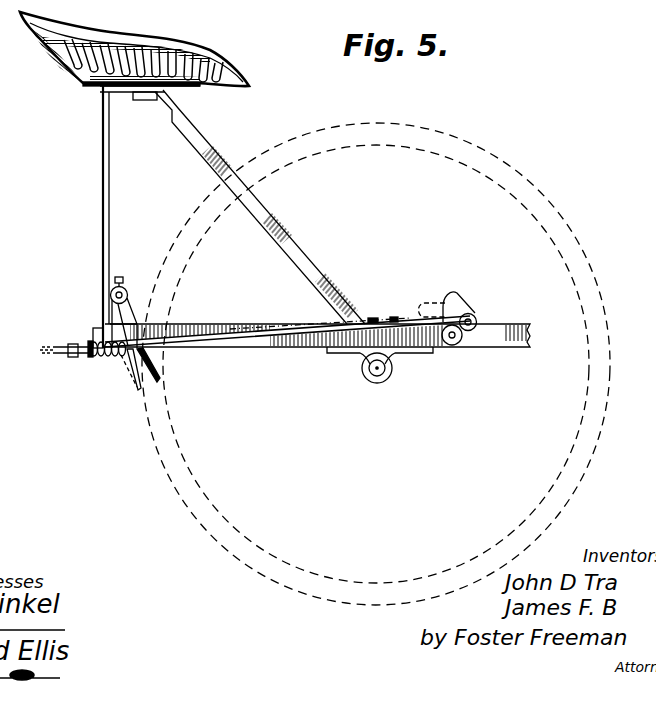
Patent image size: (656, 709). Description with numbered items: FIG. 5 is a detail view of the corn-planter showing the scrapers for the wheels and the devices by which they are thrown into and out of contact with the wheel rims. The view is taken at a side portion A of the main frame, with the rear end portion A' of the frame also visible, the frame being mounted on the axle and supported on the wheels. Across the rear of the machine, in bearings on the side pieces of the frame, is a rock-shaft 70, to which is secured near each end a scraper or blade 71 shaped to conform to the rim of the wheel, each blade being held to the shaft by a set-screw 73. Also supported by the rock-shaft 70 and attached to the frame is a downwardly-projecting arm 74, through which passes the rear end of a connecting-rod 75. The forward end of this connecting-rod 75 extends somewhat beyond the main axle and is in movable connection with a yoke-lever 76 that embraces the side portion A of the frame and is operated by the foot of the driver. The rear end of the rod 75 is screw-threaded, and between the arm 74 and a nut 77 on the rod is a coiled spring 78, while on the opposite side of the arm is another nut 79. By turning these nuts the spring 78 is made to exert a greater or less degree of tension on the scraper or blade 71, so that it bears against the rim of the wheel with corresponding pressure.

The rock-shaft 70 is at (126, 287).
The scraper or blade 71 is at (162, 370).
The set-screw 73 is at (122, 273).
The downwardly-projecting arm 74 is at (110, 321).
The connecting-rod 75 is at (275, 338).
The yoke-lever 76 is at (462, 302).
The nut 77 is at (92, 360).
The coiled spring 78 is at (115, 363).
The nut 79 is at (146, 392).
The side portion of the main frame A is at (317, 353).
The rear end portion of the main frame A' is at (78, 313).